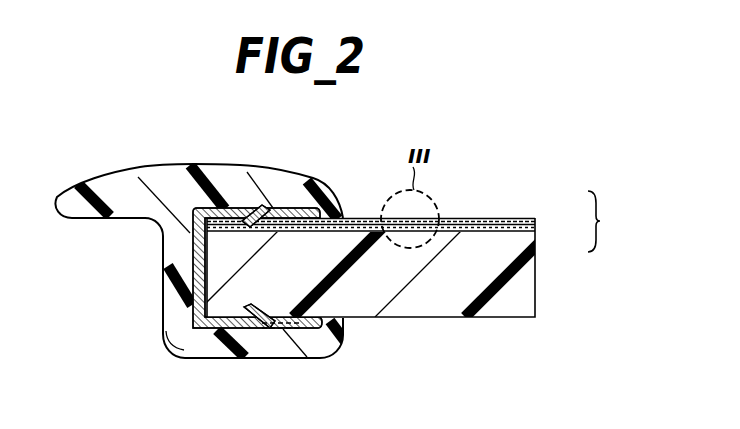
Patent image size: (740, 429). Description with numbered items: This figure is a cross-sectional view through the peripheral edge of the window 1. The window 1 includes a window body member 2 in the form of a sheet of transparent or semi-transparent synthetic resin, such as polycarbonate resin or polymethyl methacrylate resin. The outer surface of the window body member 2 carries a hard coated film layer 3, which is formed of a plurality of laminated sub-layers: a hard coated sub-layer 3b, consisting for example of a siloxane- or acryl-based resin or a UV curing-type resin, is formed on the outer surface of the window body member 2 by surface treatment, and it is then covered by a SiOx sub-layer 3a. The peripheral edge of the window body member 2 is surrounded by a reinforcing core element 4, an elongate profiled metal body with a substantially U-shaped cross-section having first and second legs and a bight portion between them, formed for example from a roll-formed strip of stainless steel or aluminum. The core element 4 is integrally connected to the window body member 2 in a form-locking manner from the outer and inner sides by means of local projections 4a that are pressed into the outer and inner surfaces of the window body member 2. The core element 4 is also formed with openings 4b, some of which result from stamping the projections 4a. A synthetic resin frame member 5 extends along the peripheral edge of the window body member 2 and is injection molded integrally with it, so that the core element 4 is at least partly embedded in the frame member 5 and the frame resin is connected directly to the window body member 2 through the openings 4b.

The window 1 is at (462, 208).
The window body member 2 is at (523, 290).
The hard coated film layer 3 is at (604, 221).
The SiOx sub-layer 3a is at (527, 220).
The hard coated sub-layer 3b is at (530, 229).
The reinforcing core element 4 is at (193, 302).
The local projections 4a is at (241, 213).
The openings 4b is at (187, 268).
The frame member 5 is at (139, 166).